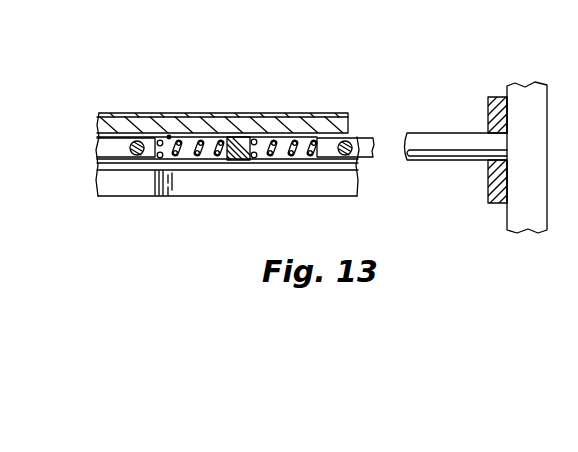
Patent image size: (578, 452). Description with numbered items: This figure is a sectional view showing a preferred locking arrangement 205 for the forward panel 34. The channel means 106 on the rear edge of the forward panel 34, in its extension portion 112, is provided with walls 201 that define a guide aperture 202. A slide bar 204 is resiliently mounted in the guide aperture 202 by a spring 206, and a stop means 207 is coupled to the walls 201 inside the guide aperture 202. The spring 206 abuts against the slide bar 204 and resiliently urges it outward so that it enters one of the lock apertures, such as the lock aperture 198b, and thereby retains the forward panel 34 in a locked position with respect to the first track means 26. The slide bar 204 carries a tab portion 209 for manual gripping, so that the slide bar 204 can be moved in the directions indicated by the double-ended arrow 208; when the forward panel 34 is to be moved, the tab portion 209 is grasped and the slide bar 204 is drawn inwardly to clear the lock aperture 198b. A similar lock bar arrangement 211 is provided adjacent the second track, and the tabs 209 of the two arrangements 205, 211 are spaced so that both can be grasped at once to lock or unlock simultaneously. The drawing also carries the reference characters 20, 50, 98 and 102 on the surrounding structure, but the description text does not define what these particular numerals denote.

The wall / support plate 20 is at (528, 83).
The first track means 26 is at (543, 200).
The forward panel 34 is at (157, 113).
The upper wall portion 50 is at (526, 113).
The lower body / bar 98 is at (147, 197).
The hatched top plate 102 is at (270, 112).
The channel means 106 is at (97, 123).
The extension portion 112 is at (367, 127).
The lock aperture 198b is at (484, 97).
The walls 201 is at (169, 136).
The guide aperture 202 is at (187, 152).
The slide bar 204 is at (421, 133).
The locking arrangement 205 is at (430, 109).
The spring 206 is at (295, 161).
The stop means 207 is at (240, 161).
The double-ended arrow 208 is at (262, 67).
The tab portion 209 is at (125, 146).
The lock bar arrangement 211 is at (90, 160).